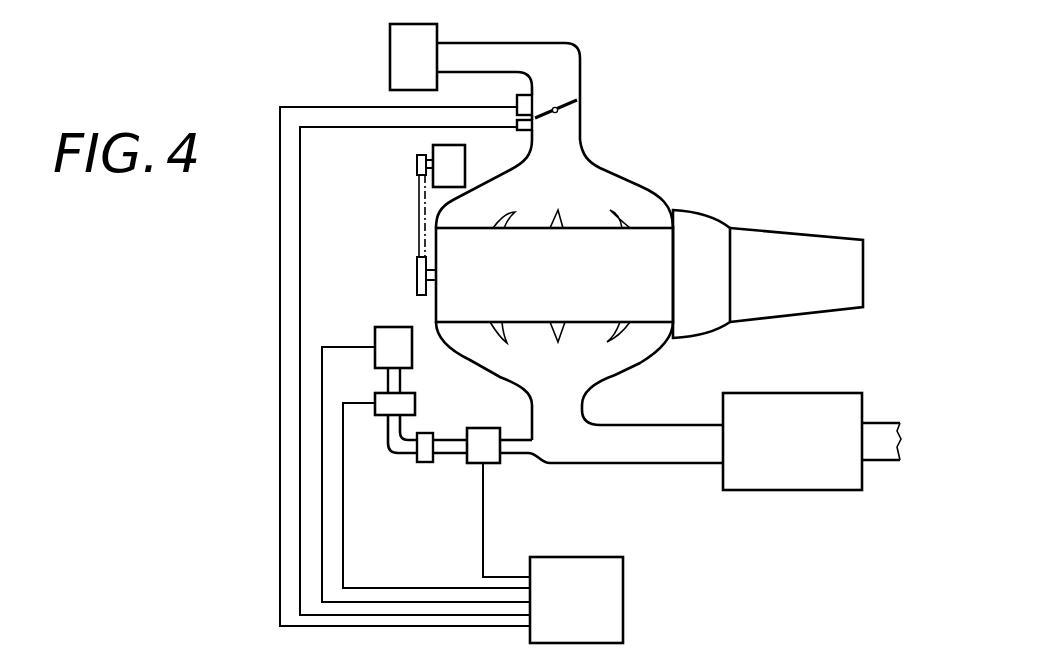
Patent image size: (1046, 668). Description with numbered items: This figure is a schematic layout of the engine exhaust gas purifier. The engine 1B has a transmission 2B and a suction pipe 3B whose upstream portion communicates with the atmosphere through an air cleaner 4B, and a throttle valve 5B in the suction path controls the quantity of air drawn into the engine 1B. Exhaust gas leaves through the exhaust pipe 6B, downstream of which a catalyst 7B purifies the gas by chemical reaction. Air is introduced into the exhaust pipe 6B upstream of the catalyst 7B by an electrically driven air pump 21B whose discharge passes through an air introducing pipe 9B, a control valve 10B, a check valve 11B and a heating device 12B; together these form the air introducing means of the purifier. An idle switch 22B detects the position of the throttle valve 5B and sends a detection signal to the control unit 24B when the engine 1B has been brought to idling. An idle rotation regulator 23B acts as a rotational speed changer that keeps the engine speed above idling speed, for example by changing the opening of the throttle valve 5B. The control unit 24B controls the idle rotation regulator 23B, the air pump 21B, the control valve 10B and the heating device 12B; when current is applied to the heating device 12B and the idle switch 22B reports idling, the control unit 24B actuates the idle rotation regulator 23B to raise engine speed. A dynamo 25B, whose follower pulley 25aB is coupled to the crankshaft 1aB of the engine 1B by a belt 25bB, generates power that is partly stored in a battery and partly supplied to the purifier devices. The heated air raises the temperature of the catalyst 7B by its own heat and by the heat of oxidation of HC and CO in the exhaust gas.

The engine 1B is at (627, 220).
The crankshaft 1aB is at (423, 268).
The transmission 2B is at (777, 243).
The suction pipe 3B is at (597, 177).
The air cleaner 4B is at (400, 44).
The throttle valve 5B is at (555, 102).
The exhaust pipe 6B is at (623, 450).
The catalyst 7B is at (805, 478).
The air introducing pipe 9B is at (392, 380).
The control valve 10B is at (410, 407).
The check valve 11B is at (427, 452).
The heating device 12B is at (478, 463).
The air pump 21B is at (380, 338).
The idle switch 22B is at (535, 138).
The idle rotation regulator 23B is at (523, 96).
The control unit 24B is at (617, 585).
The dynamo 25B is at (445, 146).
The follower pulley 25aB is at (417, 162).
The belt 25bB is at (417, 203).